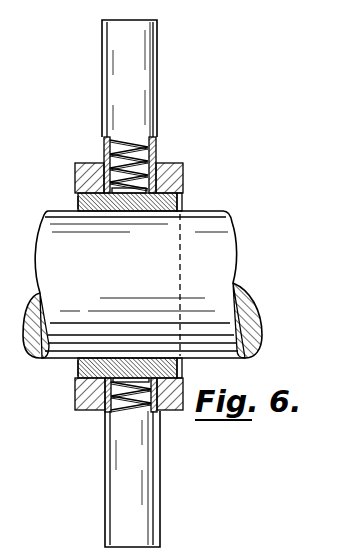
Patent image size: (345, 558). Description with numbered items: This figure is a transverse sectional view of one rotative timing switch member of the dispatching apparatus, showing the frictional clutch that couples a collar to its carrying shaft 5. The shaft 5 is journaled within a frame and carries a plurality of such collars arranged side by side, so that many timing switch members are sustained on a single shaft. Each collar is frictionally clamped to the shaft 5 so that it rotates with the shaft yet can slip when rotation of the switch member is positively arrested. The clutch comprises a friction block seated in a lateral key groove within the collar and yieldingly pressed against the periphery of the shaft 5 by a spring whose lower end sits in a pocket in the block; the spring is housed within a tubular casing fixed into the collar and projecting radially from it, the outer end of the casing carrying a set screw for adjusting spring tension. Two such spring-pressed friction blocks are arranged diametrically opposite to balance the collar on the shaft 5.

The shaft 5 is at (226, 256).